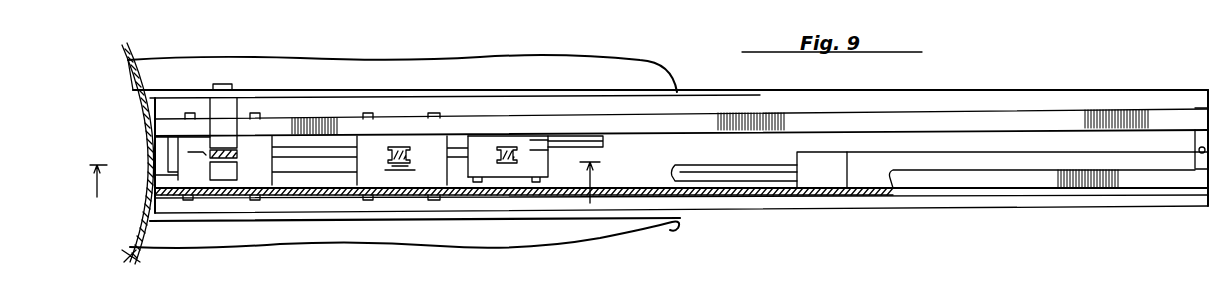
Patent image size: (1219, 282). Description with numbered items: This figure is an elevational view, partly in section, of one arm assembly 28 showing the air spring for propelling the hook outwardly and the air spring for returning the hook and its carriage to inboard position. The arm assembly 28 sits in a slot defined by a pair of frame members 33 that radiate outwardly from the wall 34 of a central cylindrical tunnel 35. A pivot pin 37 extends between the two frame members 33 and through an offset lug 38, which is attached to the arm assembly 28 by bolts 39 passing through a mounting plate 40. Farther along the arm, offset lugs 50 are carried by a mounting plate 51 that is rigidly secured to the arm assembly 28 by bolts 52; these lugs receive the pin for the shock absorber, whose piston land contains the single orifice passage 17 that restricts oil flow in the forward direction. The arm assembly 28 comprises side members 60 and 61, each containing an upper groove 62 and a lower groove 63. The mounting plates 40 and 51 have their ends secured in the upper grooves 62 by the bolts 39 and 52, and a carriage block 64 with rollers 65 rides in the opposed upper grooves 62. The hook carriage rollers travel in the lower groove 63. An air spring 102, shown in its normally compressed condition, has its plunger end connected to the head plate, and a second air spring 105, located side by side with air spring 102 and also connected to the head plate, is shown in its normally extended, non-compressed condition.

The orifice passage 17 is at (358, 189).
The arm assembly 28 is at (1111, 213).
The frame members 33 is at (670, 78).
The wall 34 is at (128, 60).
The central cylindrical tunnel 35 is at (134, 258).
The pivot pin 37 is at (217, 86).
The offset lug 38 is at (237, 100).
The bolts 39 is at (264, 198).
The mounting plate 40 is at (217, 182).
The offset lugs 50 is at (395, 147).
The mounting plate 51 is at (402, 183).
The bolts 52 is at (437, 182).
The side member 60 is at (1147, 96).
The side member 61 is at (1160, 197).
The upper groove 62 is at (510, 147).
The lower groove 63 is at (337, 182).
The carriage block 64 is at (535, 135).
The rollers 65 is at (543, 185).
The air spring 102 is at (585, 135).
The second air spring 105 is at (970, 160).